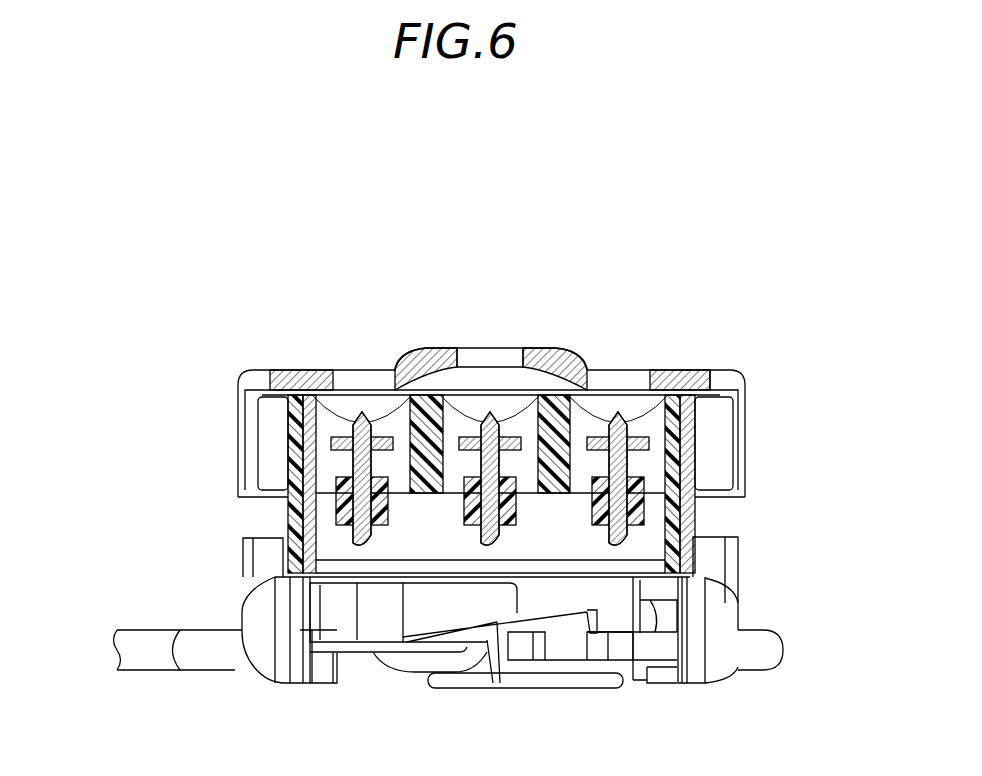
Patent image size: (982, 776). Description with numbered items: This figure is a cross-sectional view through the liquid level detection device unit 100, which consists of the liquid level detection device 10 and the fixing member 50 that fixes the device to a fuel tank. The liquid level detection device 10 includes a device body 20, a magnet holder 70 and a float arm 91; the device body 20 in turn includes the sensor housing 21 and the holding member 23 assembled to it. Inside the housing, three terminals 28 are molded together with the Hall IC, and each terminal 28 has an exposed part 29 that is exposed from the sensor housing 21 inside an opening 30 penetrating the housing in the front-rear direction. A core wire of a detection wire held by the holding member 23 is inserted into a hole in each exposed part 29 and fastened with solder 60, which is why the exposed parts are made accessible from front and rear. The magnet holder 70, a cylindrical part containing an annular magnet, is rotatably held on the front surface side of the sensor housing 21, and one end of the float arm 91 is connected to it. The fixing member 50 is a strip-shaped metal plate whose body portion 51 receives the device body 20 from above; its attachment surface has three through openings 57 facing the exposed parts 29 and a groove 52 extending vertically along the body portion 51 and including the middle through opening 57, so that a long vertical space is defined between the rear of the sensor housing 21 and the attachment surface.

The liquid level detection device unit 100 is at (563, 262).
The fixing member 50 is at (258, 367).
The body portion 51 is at (680, 367).
The groove 52 is at (483, 405).
The through opening 57 is at (340, 380).
The solder 60 is at (386, 417).
The opening 30 is at (402, 417).
The holding member 23 is at (283, 511).
The terminal 28 is at (326, 458).
The exposed part 29 is at (397, 443).
The liquid level detection device 10 is at (237, 558).
The device body 20 is at (740, 562).
The sensor housing 21 is at (687, 670).
The magnet holder 70 is at (460, 695).
The float arm 91 is at (197, 677).